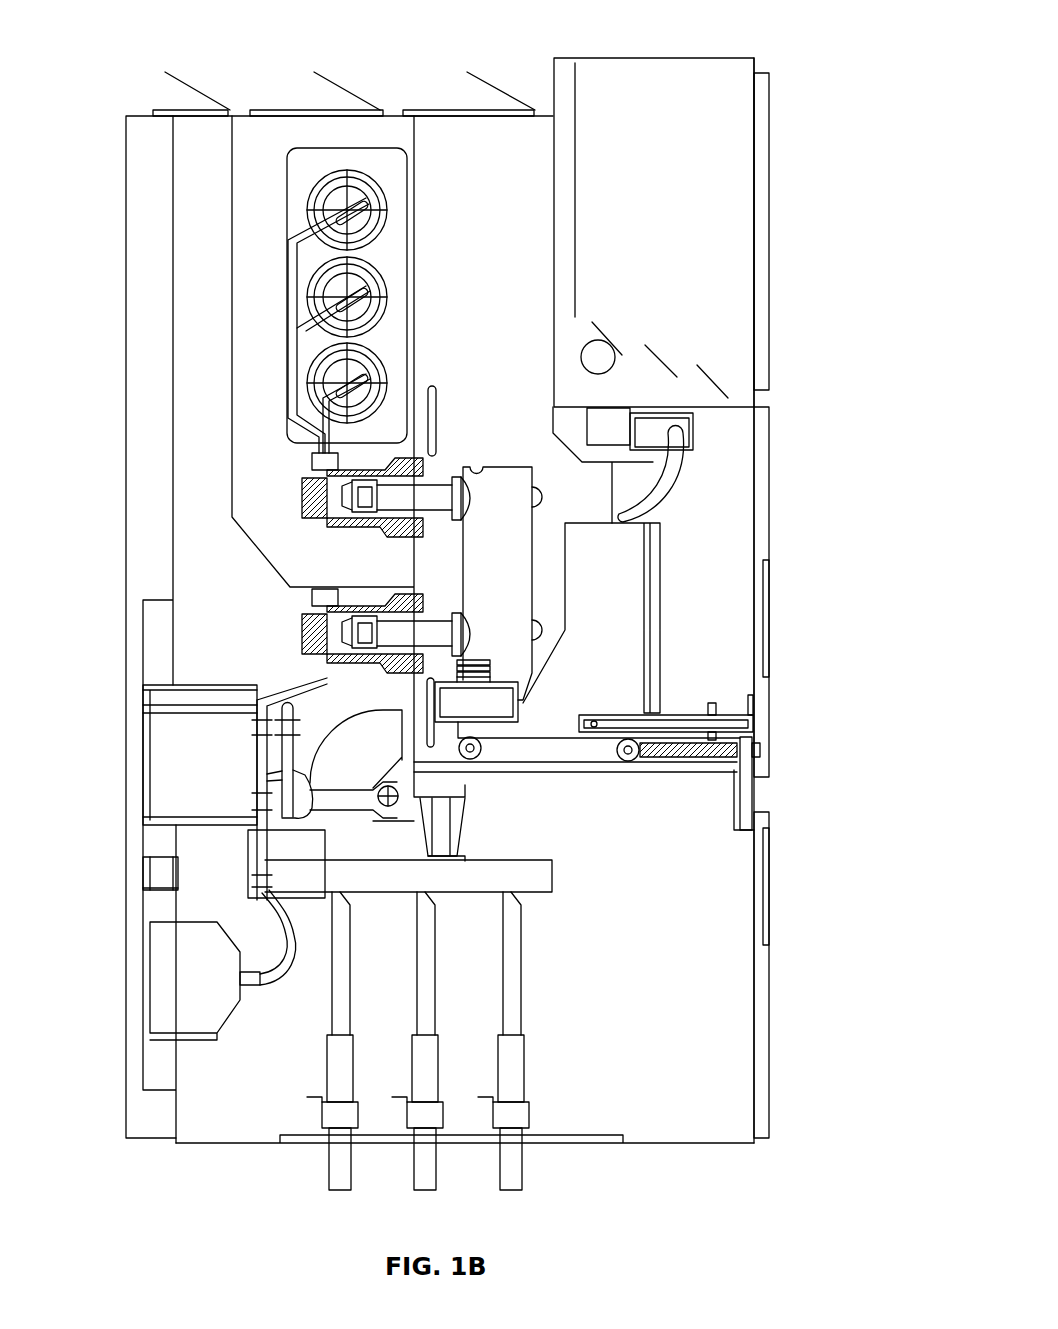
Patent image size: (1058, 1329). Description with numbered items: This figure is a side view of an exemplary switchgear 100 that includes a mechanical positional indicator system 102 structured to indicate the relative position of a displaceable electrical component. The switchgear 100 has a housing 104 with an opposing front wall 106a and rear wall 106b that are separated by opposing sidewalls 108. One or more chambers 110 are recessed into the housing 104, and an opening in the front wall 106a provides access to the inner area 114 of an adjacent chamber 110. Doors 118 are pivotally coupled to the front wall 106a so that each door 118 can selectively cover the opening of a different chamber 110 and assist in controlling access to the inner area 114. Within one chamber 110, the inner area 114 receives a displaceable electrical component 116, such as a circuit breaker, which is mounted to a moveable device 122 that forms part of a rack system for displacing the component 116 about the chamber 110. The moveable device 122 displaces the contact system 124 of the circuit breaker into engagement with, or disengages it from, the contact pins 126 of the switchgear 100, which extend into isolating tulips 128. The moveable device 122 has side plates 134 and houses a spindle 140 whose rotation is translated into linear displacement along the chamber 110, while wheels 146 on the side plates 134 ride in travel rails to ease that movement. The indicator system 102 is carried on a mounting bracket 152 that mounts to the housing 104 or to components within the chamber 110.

The switchgear 100 is at (789, 47).
The mechanical positional indicator system 102 is at (718, 688).
The housing 104 is at (703, 1127).
The front wall 106a is at (757, 797).
The rear wall 106b is at (126, 547).
The sidewall 108 is at (720, 1077).
The chamber 110 is at (722, 318).
The inner area 114 is at (675, 247).
The displaceable electrical component 116 is at (630, 642).
The door 118 is at (763, 236).
The moveable device 122 is at (572, 752).
The contact system 124 is at (441, 465).
The contact pin 126 is at (365, 480).
The isolating tulip 128 is at (367, 527).
The side plate 134 is at (528, 752).
The spindle 140 is at (692, 760).
The wheel 146 is at (474, 758).
The mounting bracket 152 is at (727, 715).